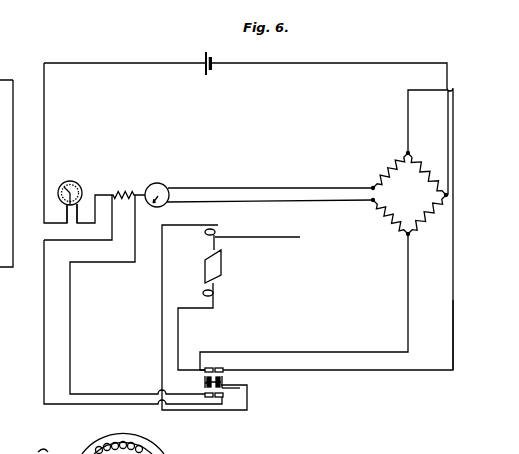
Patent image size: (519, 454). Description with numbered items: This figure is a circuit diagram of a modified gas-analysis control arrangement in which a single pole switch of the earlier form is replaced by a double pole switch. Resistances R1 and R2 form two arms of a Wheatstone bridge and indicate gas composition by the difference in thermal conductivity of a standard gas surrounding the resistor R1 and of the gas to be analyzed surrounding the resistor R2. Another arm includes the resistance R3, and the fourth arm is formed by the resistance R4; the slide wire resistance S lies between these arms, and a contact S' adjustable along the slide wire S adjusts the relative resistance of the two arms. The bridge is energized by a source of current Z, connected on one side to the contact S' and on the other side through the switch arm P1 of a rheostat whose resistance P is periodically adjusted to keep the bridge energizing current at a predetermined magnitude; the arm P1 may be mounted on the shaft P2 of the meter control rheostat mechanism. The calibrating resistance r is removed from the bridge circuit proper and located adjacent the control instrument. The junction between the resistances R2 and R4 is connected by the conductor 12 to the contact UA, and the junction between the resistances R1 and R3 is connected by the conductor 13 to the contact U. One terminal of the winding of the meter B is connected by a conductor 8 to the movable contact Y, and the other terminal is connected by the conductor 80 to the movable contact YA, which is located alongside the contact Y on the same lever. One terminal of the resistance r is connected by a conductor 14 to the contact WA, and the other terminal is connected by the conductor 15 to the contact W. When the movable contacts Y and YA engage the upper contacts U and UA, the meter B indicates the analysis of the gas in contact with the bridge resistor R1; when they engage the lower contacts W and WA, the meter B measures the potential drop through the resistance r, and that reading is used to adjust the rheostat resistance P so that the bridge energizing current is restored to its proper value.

The source of current Z is at (204, 60).
The rheostat resistance P is at (76, 186).
The shaft of meter control rheostat mechanism P2 is at (80, 195).
The bridge current calibrating resistance r is at (126, 190).
The slide wire resistance S is at (170, 181).
The adjustable contact S' is at (270, 183).
The bridge resistance R1 is at (420, 166).
The bridge resistance R2 is at (432, 218).
The bridge arm resistance R3 is at (391, 167).
The bridge arm resistance R4 is at (390, 226).
The conductor 12 is at (407, 286).
The conductor 13 is at (453, 297).
The conductor 14 is at (70, 305).
The conductor 15 is at (44, 338).
The conductor 8 is at (162, 300).
The conductor 80 is at (184, 307).
The meter B is at (230, 270).
The upper contact UA is at (208, 368).
The upper contact U is at (222, 368).
The second movable contact YA is at (205, 383).
The movable switch contact Y is at (240, 388).
The lower contact W is at (222, 397).
The lower contact WA is at (210, 397).
The rheostat switch arm P1 is at (143, 450).